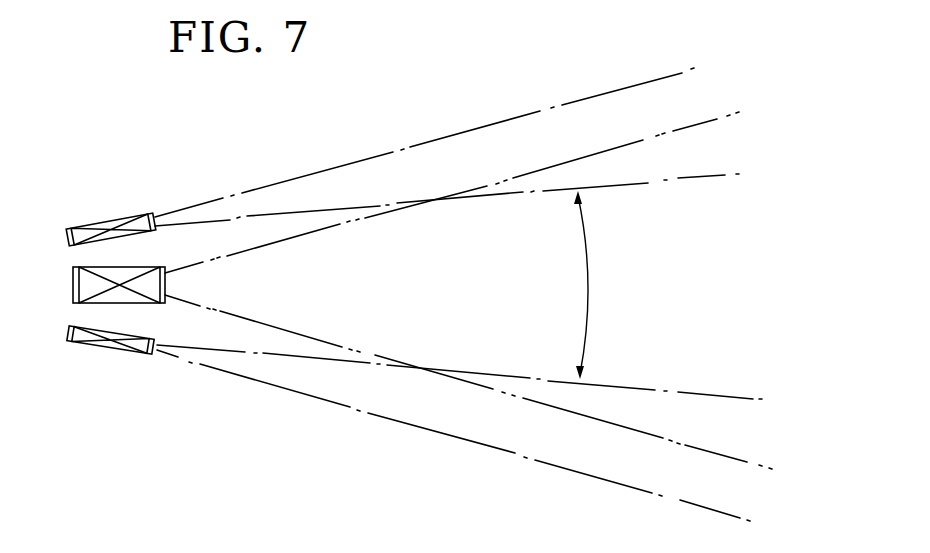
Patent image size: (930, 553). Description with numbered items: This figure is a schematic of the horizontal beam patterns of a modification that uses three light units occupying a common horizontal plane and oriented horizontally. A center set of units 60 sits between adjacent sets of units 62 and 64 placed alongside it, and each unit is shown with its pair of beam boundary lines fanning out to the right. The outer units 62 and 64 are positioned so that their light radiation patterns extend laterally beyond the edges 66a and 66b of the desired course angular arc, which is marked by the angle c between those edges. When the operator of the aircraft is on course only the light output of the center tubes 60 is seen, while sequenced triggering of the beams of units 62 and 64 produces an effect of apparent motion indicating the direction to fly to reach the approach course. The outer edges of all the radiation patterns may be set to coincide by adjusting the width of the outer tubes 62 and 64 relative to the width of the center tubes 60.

The center set of units 60 is at (127, 303).
The adjacent set of units 62 is at (119, 218).
The adjacent set of units 64 is at (115, 352).
The edge of the desired course angular arc 66a is at (696, 128).
The edge of the desired course angular arc 66b is at (700, 447).
The beam angle c is at (590, 283).